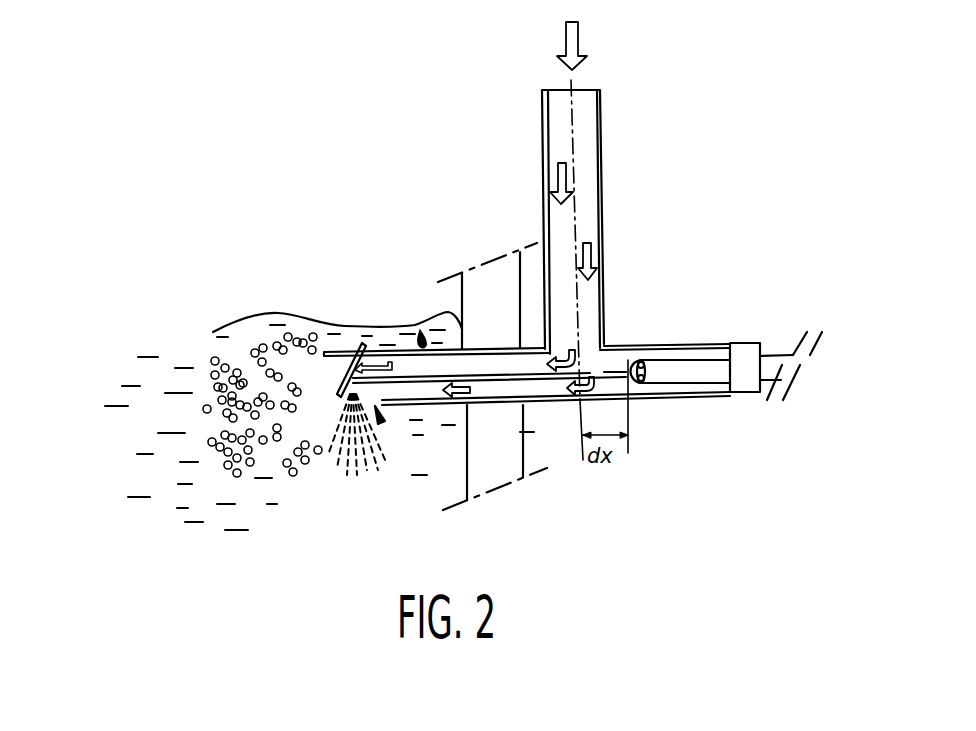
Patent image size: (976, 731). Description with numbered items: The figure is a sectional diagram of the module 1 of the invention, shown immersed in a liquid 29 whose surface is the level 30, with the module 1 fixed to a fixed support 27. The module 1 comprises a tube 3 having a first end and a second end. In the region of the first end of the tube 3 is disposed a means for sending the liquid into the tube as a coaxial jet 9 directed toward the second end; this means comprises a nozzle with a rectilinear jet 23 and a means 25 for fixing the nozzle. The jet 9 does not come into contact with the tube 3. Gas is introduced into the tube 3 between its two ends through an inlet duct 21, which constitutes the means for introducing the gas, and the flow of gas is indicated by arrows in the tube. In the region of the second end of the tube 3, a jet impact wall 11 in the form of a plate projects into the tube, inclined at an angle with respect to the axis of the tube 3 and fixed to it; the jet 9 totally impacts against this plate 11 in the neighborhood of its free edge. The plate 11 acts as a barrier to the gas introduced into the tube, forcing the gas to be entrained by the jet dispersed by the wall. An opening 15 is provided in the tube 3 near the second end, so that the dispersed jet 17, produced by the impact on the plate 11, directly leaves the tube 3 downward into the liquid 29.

The module 1 is at (413, 330).
The tube 3 is at (441, 405).
The jet 9 is at (542, 379).
The jet impact wall 11 is at (360, 343).
The opening 15 is at (380, 424).
The dispersed jet 17 is at (343, 486).
The inlet duct 21 is at (604, 262).
The nozzle with rectilinear jet 23 is at (705, 376).
The means for fixing the nozzle 25 is at (745, 392).
The fixed support 27 is at (496, 490).
The liquid 29 is at (185, 415).
The level 30 is at (213, 332).